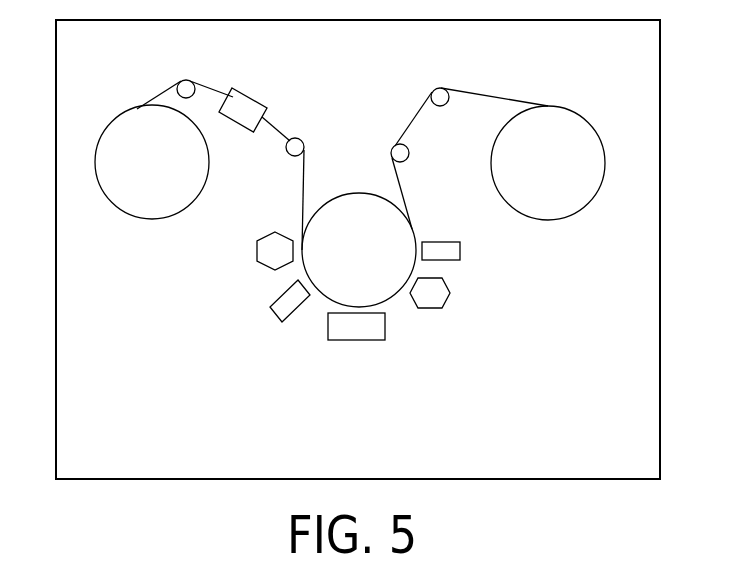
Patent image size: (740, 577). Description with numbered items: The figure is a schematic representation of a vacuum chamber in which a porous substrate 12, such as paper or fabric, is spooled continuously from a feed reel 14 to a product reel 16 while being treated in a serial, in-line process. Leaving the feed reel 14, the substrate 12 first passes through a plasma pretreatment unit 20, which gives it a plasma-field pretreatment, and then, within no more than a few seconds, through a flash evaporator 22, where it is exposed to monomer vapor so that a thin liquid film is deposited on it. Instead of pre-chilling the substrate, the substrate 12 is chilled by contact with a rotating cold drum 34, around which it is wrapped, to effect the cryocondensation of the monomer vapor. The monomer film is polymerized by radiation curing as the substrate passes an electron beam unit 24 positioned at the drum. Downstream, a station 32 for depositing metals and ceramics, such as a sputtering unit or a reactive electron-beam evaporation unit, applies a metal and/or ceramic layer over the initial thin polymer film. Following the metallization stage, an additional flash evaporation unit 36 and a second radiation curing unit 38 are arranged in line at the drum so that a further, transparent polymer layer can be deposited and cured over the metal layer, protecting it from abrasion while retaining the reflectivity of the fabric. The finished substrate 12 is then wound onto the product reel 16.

The porous substrate 12 is at (152, 97).
The feed reel 14 is at (152, 203).
The product reel 16 is at (573, 133).
The plasma pretreatment unit 20 is at (246, 112).
The flash evaporator 22 is at (278, 243).
The electron beam unit 24 is at (283, 305).
The station for depositing metals and ceramics 32 is at (340, 338).
The cold drum 34 is at (343, 200).
The additional flash evaporation unit 36 is at (428, 305).
The second radiation curing unit 38 is at (452, 252).